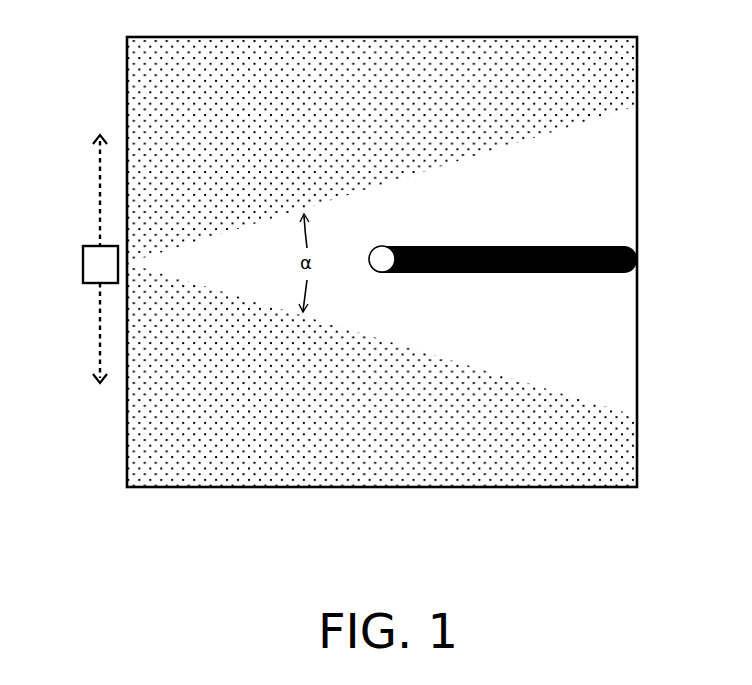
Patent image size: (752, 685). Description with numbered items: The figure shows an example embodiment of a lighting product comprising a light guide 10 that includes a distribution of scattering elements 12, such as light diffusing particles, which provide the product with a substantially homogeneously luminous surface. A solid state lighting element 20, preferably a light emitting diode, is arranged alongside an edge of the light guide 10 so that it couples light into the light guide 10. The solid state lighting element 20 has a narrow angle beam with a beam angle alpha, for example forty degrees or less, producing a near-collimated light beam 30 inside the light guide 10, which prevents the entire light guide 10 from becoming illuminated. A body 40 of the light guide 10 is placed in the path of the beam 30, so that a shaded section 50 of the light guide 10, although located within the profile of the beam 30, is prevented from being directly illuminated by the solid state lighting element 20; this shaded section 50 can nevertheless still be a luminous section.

The light guide 10 is at (639, 348).
The scattering elements 12 is at (624, 443).
The solid state lighting element 20 is at (101, 262).
The near-collimated light beam 30 is at (622, 168).
The body 40 is at (385, 273).
The shaded section 50 is at (638, 252).